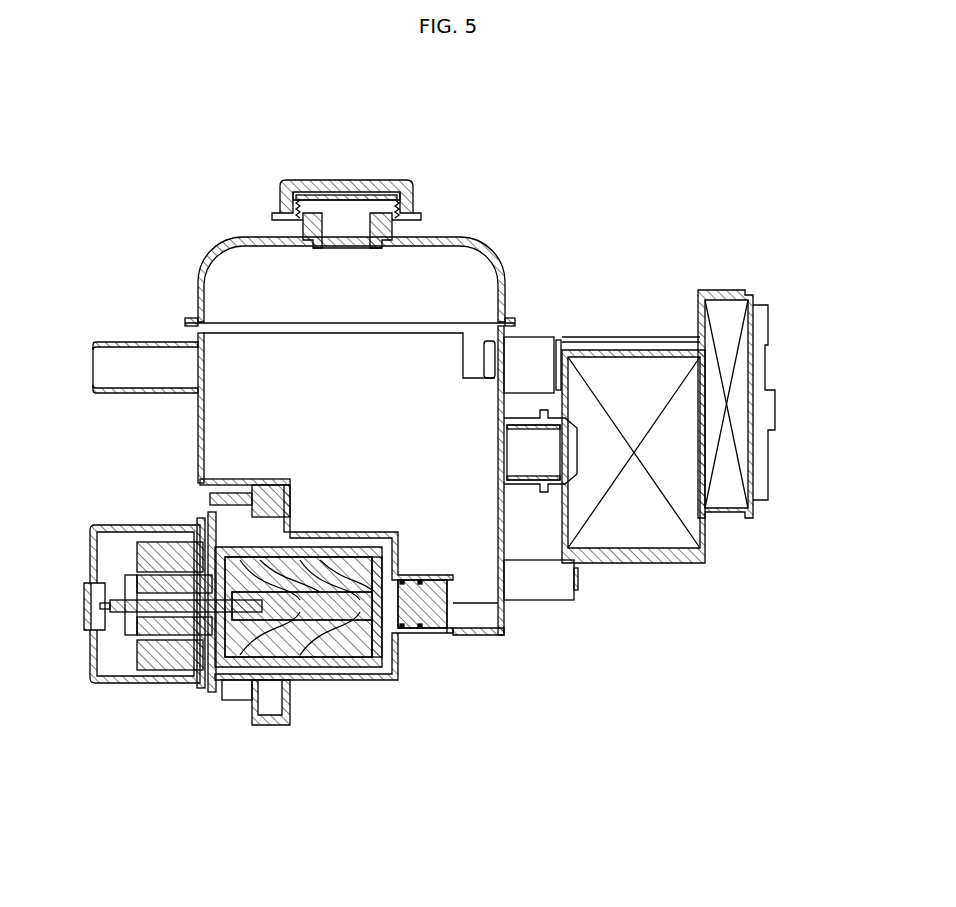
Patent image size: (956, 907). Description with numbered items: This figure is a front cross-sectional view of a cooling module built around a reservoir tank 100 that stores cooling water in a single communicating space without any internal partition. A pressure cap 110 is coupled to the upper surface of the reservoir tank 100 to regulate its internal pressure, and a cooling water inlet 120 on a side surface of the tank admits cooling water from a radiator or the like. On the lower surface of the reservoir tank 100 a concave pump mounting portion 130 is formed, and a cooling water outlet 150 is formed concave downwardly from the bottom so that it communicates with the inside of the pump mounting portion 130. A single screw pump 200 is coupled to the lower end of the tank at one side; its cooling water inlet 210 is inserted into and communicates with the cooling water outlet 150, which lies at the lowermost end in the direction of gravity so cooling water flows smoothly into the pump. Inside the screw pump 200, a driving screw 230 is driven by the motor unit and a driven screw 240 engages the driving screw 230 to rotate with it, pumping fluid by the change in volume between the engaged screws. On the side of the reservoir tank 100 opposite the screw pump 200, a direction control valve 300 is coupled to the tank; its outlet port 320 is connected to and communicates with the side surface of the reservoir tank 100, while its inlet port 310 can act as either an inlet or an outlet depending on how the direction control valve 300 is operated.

The reservoir tank 100 is at (441, 236).
The pressure cap 110 is at (378, 178).
The cooling water inlet 120 is at (114, 343).
The pump mounting portion 130 is at (268, 725).
The cooling water outlet 150 is at (493, 637).
The screw pump 200 is at (222, 700).
The cooling water inlet 210 is at (455, 622).
The driving screw 230 is at (340, 673).
The driven screw 240 is at (362, 673).
The direction control valve 300 is at (627, 350).
The inlet port 310 is at (530, 492).
The outlet port 320 is at (548, 337).